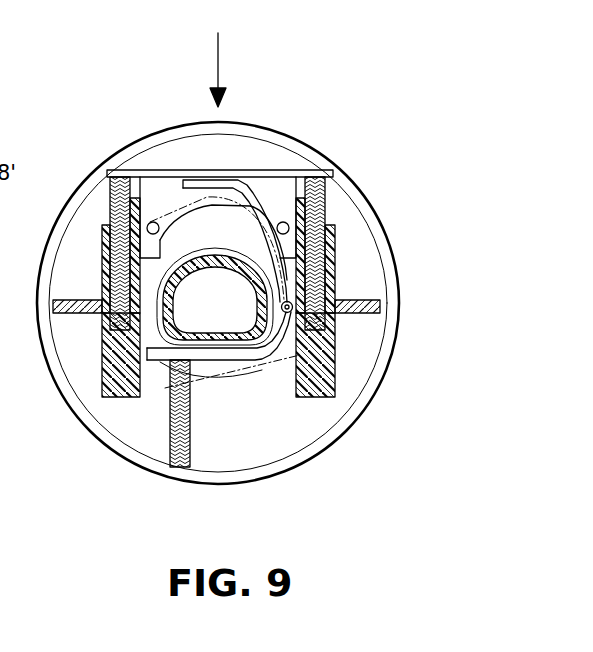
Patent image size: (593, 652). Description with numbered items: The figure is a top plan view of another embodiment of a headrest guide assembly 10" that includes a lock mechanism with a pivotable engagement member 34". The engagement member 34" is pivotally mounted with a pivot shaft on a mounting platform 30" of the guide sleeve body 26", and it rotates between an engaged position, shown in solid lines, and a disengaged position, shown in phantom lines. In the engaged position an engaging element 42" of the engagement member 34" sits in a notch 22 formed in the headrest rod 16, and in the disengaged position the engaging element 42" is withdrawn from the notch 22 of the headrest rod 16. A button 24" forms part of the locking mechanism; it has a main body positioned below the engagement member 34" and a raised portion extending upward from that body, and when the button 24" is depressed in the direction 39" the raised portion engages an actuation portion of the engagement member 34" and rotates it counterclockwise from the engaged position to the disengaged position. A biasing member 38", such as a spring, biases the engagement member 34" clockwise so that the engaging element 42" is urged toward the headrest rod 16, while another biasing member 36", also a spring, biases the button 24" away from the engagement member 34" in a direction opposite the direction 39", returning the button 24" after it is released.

The headrest guide assembly 10 is at (340, 76).
The headrest rod 16 is at (156, 310).
The notch 22 is at (226, 348).
The button 24 is at (155, 137).
The guide sleeve body 26 is at (238, 303).
The mounting platform 30 is at (363, 350).
The engagement member 34 is at (262, 200).
The biasing member 36 is at (323, 213).
The biasing member 38 is at (190, 383).
The direction 39 is at (222, 63).
The engaging element 42 is at (143, 392).